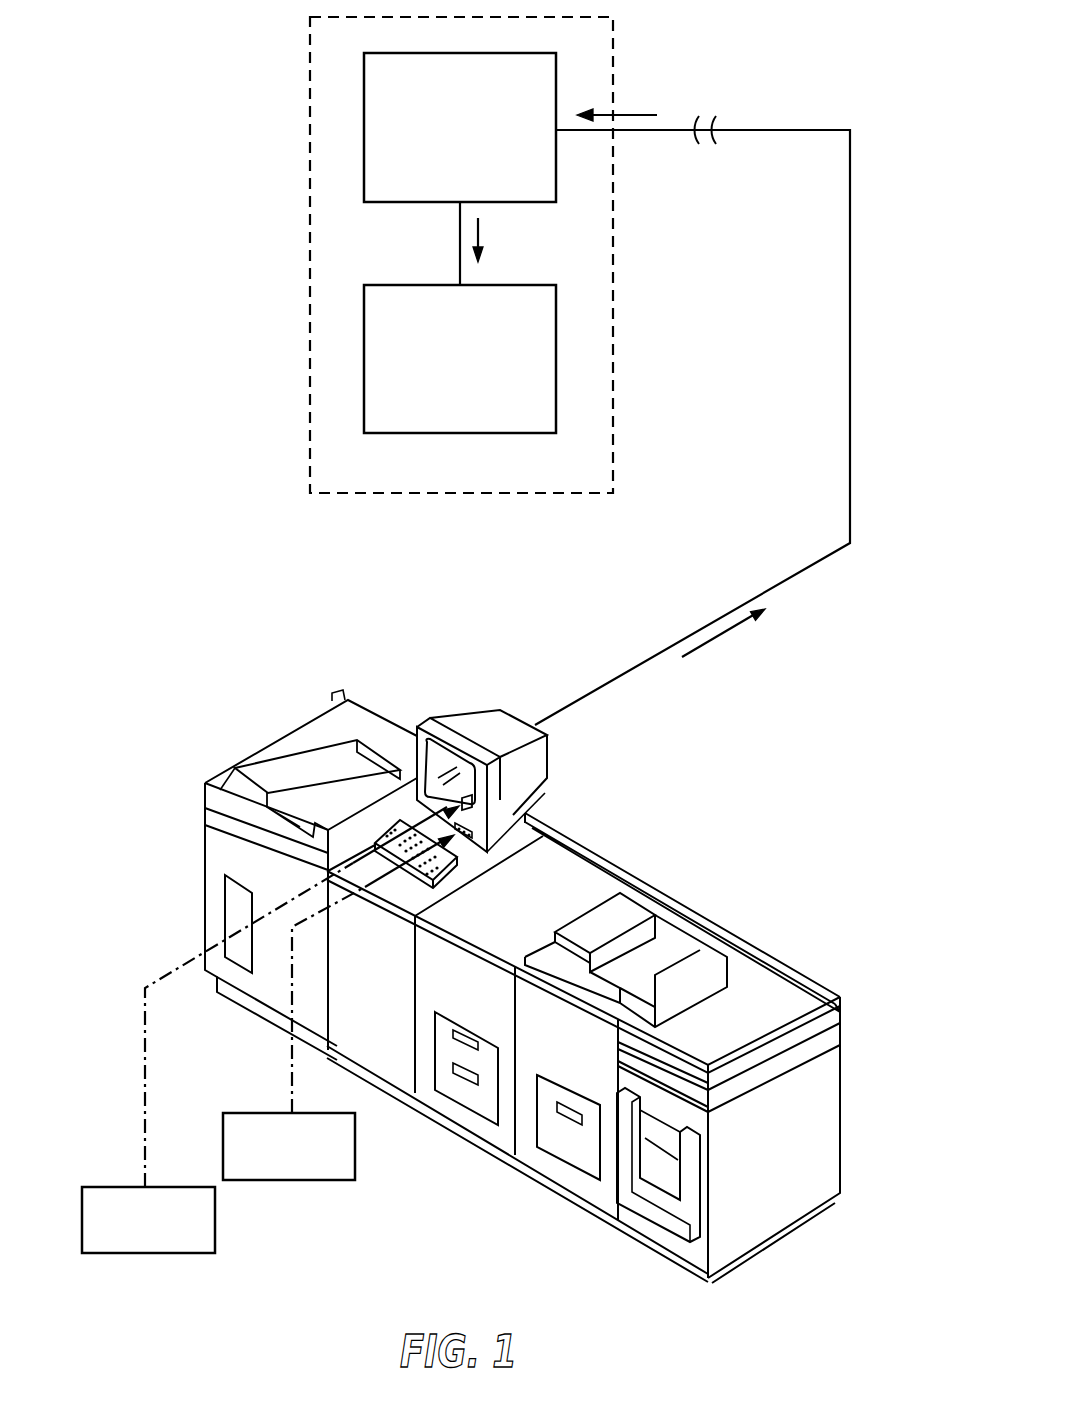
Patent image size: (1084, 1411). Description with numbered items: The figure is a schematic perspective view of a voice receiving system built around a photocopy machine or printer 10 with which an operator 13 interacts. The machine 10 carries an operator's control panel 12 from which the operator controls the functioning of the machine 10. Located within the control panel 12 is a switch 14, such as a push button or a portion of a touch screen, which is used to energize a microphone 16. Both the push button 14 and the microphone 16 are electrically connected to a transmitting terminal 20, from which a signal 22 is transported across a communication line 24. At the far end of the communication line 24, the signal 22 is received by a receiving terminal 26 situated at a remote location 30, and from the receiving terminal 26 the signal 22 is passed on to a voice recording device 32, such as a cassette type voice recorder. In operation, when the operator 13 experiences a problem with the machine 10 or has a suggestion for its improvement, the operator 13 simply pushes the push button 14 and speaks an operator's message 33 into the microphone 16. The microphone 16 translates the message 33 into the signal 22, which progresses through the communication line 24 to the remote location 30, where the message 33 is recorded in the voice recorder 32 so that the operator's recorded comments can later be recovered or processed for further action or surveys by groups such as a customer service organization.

The photocopy machine or printer 10 is at (594, 820).
The operator's control panel 12 is at (437, 790).
The operator 13 is at (141, 1062).
The switch 14 is at (462, 803).
The microphone 16 is at (467, 841).
The transmitting terminal 20 is at (502, 717).
The signal 22 is at (628, 115).
The communication line 24 is at (850, 357).
The receiving terminal 26 is at (412, 202).
The remote location 30 is at (305, 356).
The voice recording device 32 is at (410, 433).
The operator's message 33 is at (287, 1072).